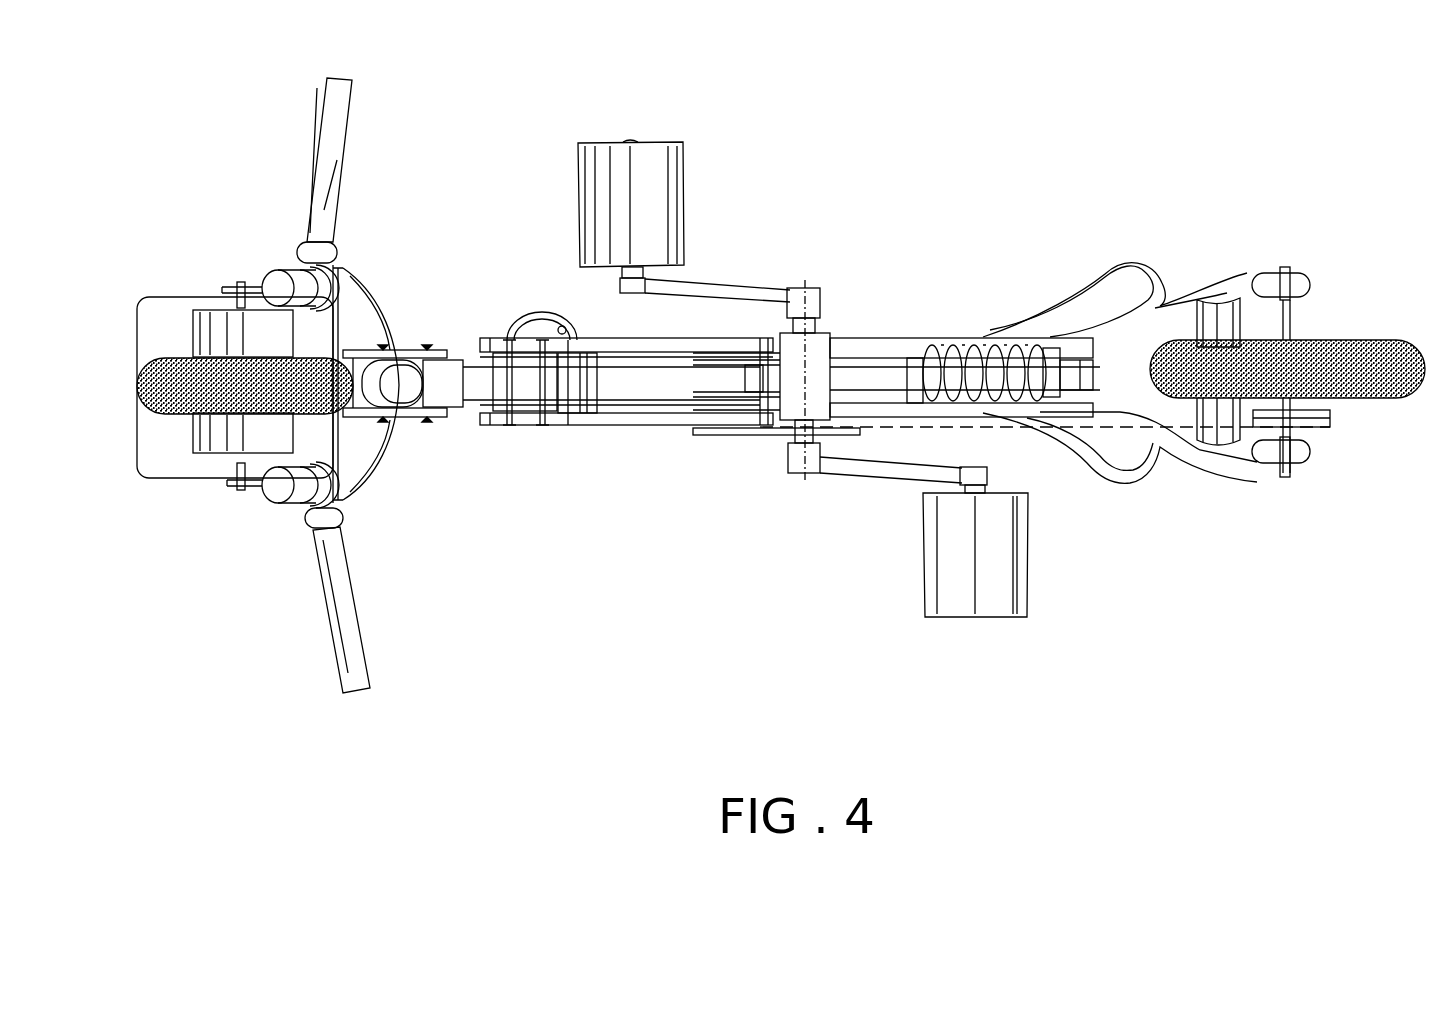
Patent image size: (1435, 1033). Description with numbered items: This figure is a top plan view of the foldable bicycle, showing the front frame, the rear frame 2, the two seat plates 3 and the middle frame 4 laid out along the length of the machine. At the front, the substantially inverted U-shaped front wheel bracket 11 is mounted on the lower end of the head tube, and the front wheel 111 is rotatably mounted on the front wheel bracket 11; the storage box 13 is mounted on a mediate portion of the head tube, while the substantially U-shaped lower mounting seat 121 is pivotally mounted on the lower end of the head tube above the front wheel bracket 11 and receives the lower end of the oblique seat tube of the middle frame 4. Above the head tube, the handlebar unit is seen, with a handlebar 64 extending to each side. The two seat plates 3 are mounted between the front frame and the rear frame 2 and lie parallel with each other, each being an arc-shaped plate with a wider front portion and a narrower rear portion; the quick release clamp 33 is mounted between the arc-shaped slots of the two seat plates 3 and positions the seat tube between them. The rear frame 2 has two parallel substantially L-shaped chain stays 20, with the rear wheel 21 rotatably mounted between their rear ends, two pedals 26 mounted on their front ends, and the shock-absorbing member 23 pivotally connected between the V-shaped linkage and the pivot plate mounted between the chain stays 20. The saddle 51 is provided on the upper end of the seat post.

The rear frame 2 is at (1197, 463).
The seat plates 3 is at (617, 343).
The middle frame 4 is at (530, 385).
The front wheel bracket 11 is at (277, 488).
The storage box 13 is at (172, 313).
The chain stays 20 is at (1237, 453).
The rear wheel 21 is at (1340, 342).
The shock-absorbing member 23 is at (977, 353).
The pedals 26 is at (658, 155).
The quick release clamp 33 is at (583, 385).
The saddle 51 is at (1110, 262).
The handlebar 64 is at (337, 166).
The front wheel 111 is at (172, 417).
The lower mounting seat 121 is at (440, 420).